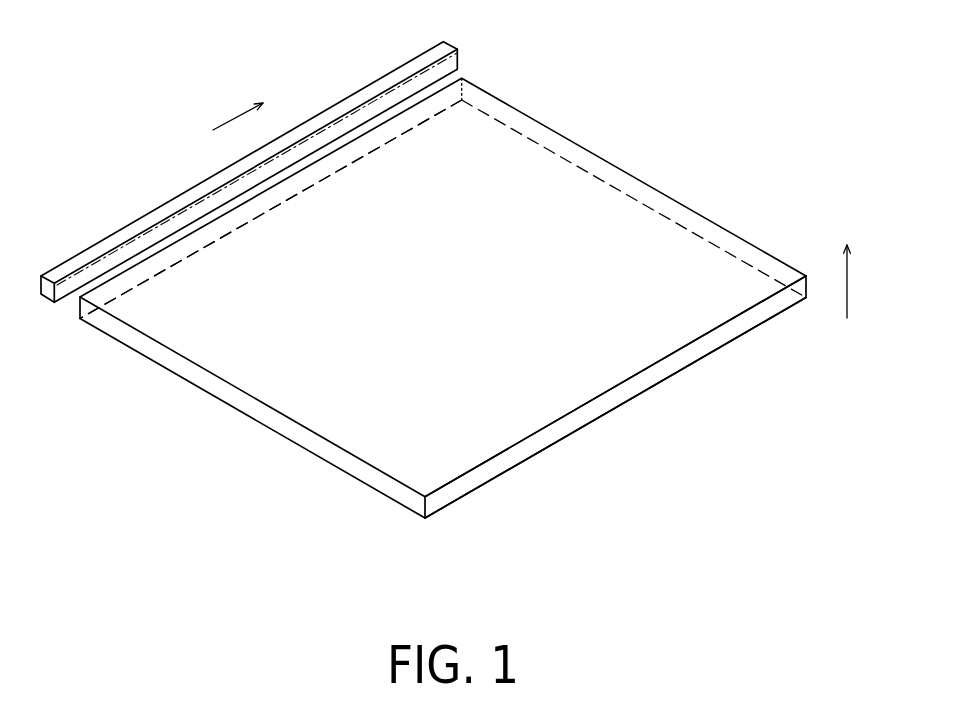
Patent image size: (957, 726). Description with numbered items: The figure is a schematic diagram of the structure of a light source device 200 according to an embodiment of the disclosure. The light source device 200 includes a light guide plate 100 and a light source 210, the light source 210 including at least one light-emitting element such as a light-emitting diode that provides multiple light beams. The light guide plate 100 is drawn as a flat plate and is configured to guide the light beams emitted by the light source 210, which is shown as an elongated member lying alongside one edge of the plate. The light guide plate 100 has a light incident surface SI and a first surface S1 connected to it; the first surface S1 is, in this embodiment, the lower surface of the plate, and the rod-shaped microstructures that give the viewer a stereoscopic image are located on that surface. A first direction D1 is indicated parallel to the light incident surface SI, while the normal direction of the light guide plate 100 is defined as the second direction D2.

The light guide plate 100 is at (666, 161).
The light source device 200 is at (862, 450).
The light source 210 is at (378, 82).
The first surface S1 is at (553, 435).
The light incident surface SI is at (443, 108).
The first direction D1 is at (238, 103).
The second direction D2 is at (863, 281).